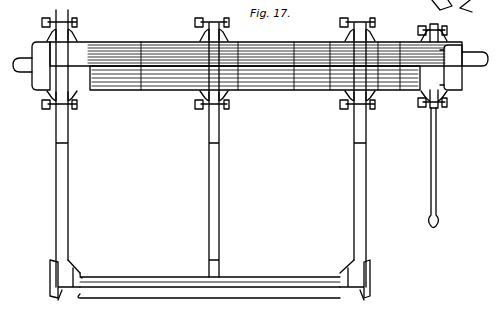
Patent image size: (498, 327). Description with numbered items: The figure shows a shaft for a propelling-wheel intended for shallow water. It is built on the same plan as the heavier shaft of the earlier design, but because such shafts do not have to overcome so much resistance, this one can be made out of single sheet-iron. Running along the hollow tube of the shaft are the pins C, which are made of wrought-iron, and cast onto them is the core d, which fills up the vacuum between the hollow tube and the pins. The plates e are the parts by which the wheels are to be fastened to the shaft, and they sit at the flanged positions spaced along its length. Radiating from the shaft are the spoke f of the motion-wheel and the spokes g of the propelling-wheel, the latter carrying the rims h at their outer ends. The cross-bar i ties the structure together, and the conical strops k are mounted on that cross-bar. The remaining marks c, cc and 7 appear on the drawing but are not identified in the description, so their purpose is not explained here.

The shaft c is at (19, 58).
The bolts cc is at (43, 23).
The core d is at (54, 46).
The pins C is at (148, 72).
The plates e is at (70, 30).
The spokes of the propelling-wheel g is at (69, 148).
The spoke of the motion-wheel f is at (450, 141).
The rims h is at (51, 278).
The conical strops k is at (224, 299).
The cross-bar i is at (250, 278).
The base section 7 is at (211, 298).